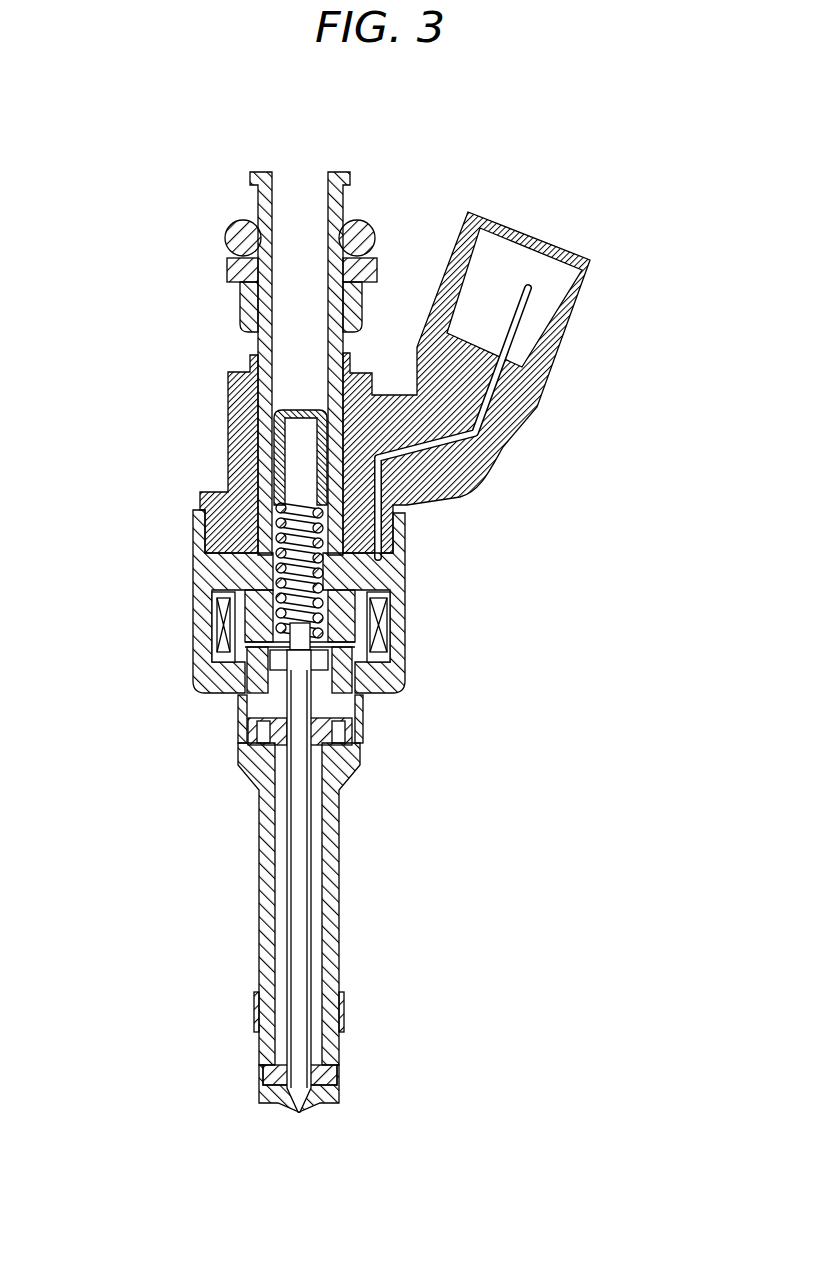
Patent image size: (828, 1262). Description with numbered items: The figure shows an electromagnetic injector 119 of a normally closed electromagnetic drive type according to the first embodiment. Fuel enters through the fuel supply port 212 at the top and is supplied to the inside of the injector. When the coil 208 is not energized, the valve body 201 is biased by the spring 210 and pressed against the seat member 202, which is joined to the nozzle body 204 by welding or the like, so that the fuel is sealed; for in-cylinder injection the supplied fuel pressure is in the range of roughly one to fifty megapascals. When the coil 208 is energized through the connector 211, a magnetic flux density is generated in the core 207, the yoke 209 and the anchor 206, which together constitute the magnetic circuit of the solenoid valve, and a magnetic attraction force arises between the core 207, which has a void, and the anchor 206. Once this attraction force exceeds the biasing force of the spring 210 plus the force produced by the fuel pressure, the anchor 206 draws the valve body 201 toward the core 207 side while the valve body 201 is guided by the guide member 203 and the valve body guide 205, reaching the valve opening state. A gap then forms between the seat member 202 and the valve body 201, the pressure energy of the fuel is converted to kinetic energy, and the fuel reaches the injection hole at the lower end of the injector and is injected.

The injector 119 is at (137, 287).
The valve body 201 is at (302, 820).
The seat member 202 is at (263, 1102).
The guide member 203 is at (337, 1067).
The nozzle body 204 is at (262, 886).
The valve body guide 205 is at (355, 723).
The anchor 206 is at (233, 700).
The core 207 is at (357, 622).
The coil 208 is at (195, 627).
The yoke 209 is at (407, 573).
The spring 210 is at (407, 530).
The connector 211 is at (537, 233).
The fuel supply port 212 is at (303, 330).